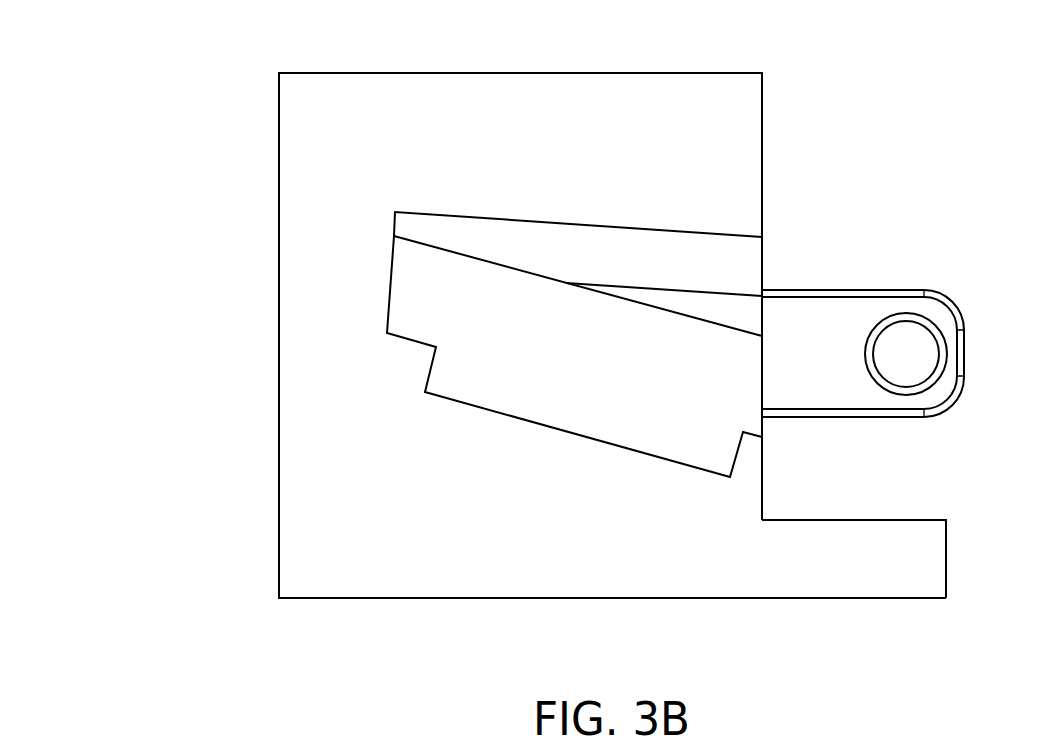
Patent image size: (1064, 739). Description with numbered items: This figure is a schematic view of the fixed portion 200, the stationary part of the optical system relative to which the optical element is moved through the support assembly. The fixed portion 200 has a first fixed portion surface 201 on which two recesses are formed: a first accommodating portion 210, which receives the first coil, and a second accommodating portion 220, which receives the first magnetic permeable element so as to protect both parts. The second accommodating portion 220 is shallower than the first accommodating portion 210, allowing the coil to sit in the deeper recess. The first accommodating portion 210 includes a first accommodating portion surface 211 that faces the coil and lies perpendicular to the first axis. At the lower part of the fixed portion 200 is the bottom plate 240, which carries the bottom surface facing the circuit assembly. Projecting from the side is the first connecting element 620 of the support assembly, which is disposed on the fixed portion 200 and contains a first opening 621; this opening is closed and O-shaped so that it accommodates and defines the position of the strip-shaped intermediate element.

The fixed portion 200 is at (139, 35).
The first fixed portion surface 201 is at (427, 495).
The first accommodating portion 210 is at (471, 452).
The first accommodating portion surface 211 is at (503, 302).
The second accommodating portion 220 is at (522, 250).
The bottom plate 240 is at (893, 559).
The first connecting element 620 is at (827, 352).
The first opening 621 is at (907, 353).